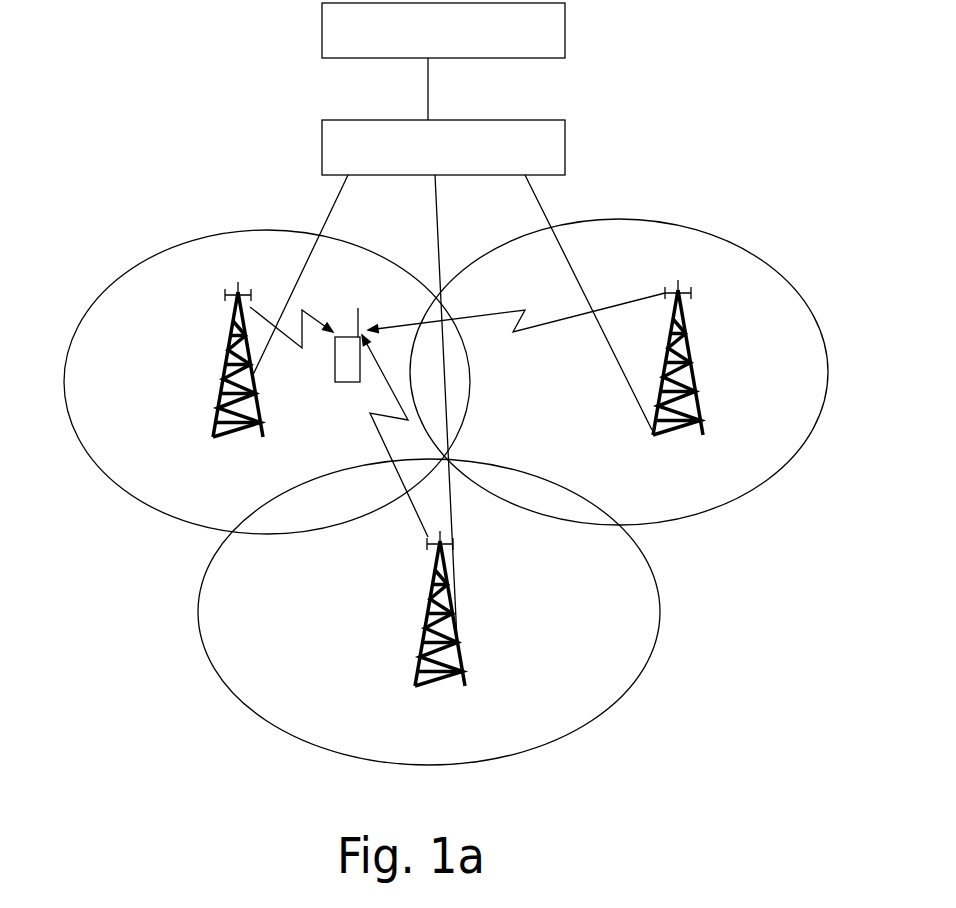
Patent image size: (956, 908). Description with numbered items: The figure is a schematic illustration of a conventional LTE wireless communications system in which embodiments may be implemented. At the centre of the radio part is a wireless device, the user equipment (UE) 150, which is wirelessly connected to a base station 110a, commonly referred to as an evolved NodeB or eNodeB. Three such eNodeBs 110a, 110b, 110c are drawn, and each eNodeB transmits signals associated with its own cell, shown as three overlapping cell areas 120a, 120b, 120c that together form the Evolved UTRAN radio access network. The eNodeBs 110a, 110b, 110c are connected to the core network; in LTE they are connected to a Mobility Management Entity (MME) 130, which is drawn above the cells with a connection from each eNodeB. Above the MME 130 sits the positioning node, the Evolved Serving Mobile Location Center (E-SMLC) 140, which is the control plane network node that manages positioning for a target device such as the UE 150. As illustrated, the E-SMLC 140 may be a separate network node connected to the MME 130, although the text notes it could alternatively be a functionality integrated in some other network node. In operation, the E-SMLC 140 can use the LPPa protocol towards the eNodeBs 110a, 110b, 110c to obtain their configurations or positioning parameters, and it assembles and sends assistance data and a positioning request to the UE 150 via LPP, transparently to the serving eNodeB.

The Evolved Serving Mobile Location Center (E-SMLC) 140 is at (520, 49).
The Mobility Management Entity (MME) 130 is at (473, 165).
The base station (eNodeB) 110a is at (210, 418).
The base station (eNodeB) 110b is at (702, 417).
The base station (eNodeB) 110c is at (468, 668).
The cell 120a is at (173, 327).
The cell 120b is at (808, 335).
The cell 120c is at (323, 712).
The user equipment (UE) 150 is at (338, 383).